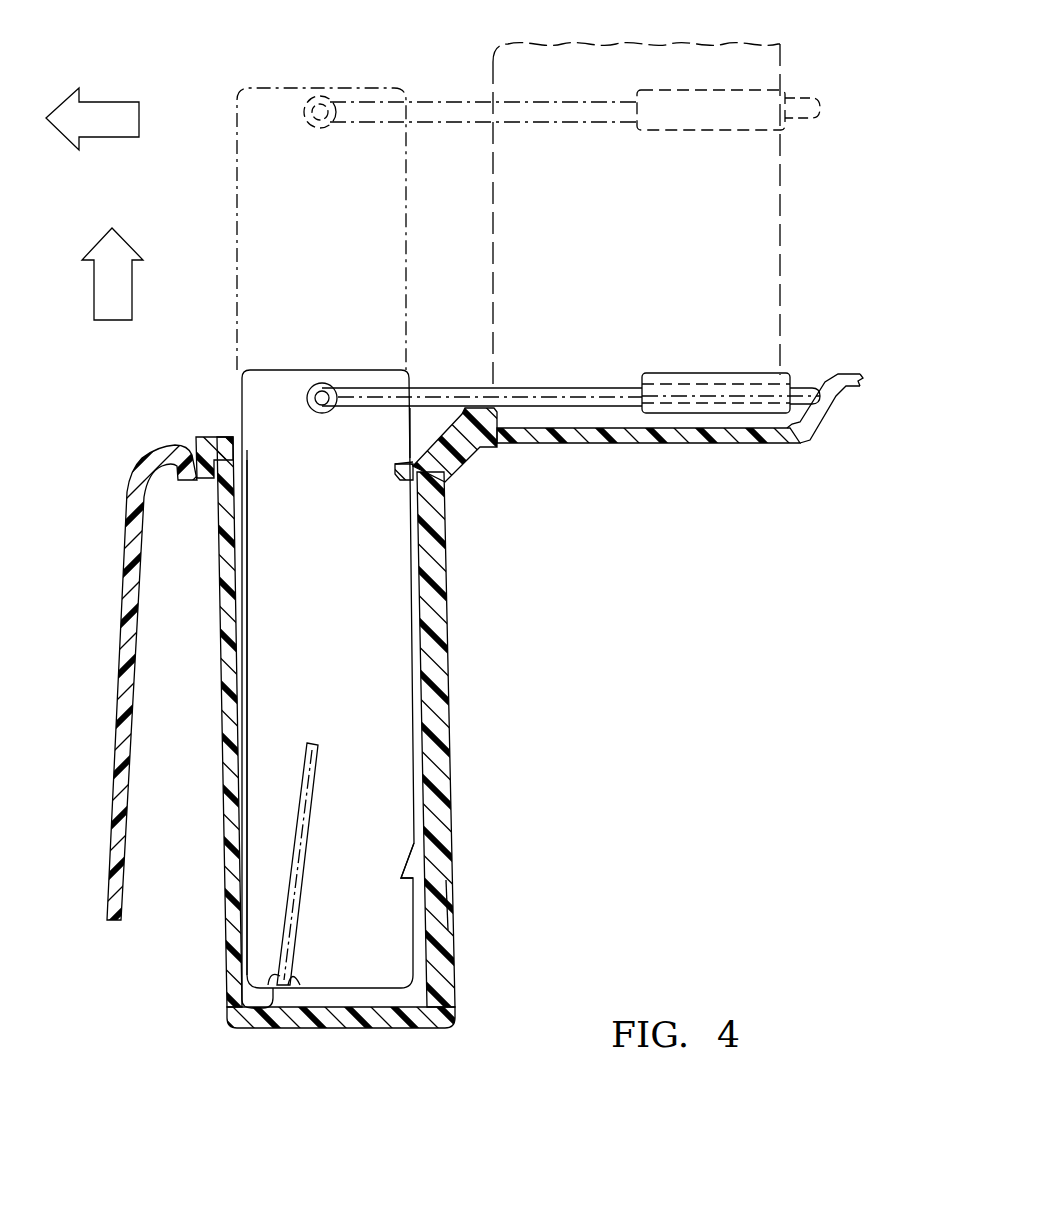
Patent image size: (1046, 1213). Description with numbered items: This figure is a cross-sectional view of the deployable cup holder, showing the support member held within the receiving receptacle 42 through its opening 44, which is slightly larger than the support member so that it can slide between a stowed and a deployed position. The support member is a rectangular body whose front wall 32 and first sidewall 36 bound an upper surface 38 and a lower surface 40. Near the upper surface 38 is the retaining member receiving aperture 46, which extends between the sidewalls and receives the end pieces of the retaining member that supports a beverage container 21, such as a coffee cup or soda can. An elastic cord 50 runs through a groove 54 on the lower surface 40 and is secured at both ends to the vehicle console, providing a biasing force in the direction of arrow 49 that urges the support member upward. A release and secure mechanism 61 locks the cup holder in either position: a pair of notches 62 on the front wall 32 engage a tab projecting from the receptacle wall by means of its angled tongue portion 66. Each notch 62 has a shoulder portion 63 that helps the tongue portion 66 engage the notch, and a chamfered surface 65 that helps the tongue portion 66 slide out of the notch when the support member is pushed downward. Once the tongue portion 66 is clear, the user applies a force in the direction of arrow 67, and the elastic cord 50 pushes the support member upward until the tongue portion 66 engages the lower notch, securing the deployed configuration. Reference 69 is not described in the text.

The beverage container 21 is at (790, 240).
The front wall 32 is at (417, 762).
The first sidewall 36 is at (387, 653).
The upper surface 38 is at (275, 370).
The lower surface 40 is at (440, 1022).
The receiving receptacle 42 is at (196, 434).
The opening 44 is at (233, 437).
The retaining member receiving aperture 46 is at (318, 412).
The arrow 49 is at (93, 290).
The elastic cord 50 is at (300, 900).
The groove 54 is at (268, 990).
The release and secure mechanism 61 is at (450, 420).
The notch 62 is at (393, 474).
The shoulder portion 63 is at (448, 903).
The chamfered surface 65 is at (420, 863).
The tongue portion 66 is at (417, 490).
The arrow 67 is at (104, 100).
The edge 69 is at (397, 470).